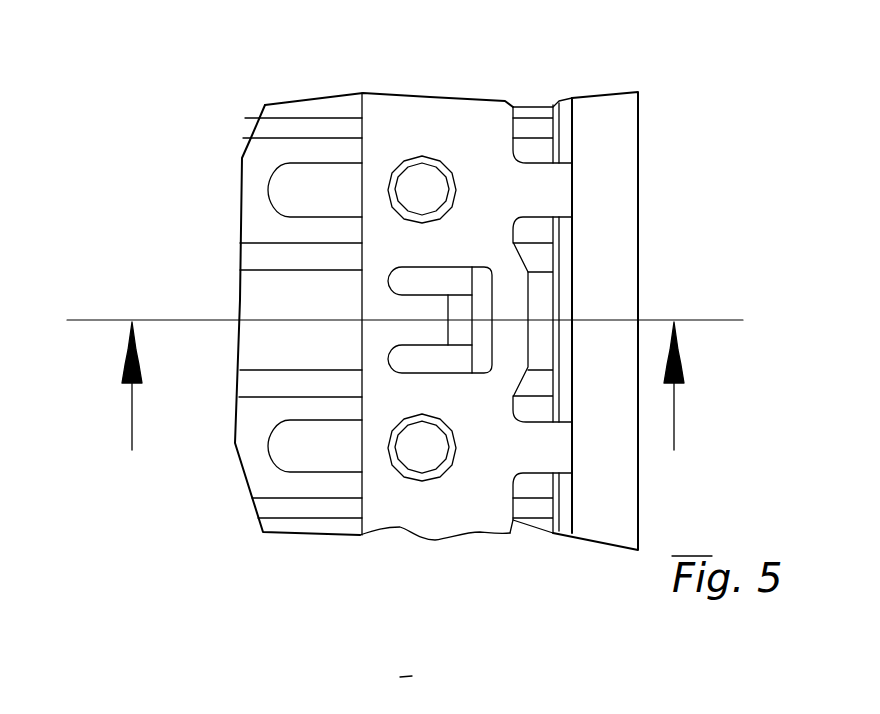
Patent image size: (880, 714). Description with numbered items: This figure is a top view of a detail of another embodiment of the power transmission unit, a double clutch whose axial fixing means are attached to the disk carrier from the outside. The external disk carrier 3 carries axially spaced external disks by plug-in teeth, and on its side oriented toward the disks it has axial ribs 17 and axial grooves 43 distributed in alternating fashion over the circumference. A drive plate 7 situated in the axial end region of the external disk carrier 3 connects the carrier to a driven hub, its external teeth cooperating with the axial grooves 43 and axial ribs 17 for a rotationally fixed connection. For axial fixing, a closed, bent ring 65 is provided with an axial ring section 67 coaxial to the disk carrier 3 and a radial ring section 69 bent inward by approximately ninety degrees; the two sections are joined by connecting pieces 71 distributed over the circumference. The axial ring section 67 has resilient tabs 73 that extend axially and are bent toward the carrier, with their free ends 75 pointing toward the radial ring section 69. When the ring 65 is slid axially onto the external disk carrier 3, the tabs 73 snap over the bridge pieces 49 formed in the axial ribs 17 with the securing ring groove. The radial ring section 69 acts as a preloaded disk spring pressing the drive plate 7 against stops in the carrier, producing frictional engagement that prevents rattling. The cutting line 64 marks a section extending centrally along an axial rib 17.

The external disk carrier 3 is at (258, 158).
The axial ribs 17 is at (250, 292).
The axial grooves 43 is at (240, 450).
The cutting line 64 is at (85, 320).
The resilient tabs 73 is at (430, 313).
The closed, bent ring 65 is at (487, 138).
The drive plate 7 is at (560, 110).
The bridge pieces 49 is at (480, 345).
The axial ring section 67 is at (428, 500).
The connecting pieces 71 is at (545, 457).
The radial ring section 69 is at (562, 513).
The free ends 75 is at (417, 713).